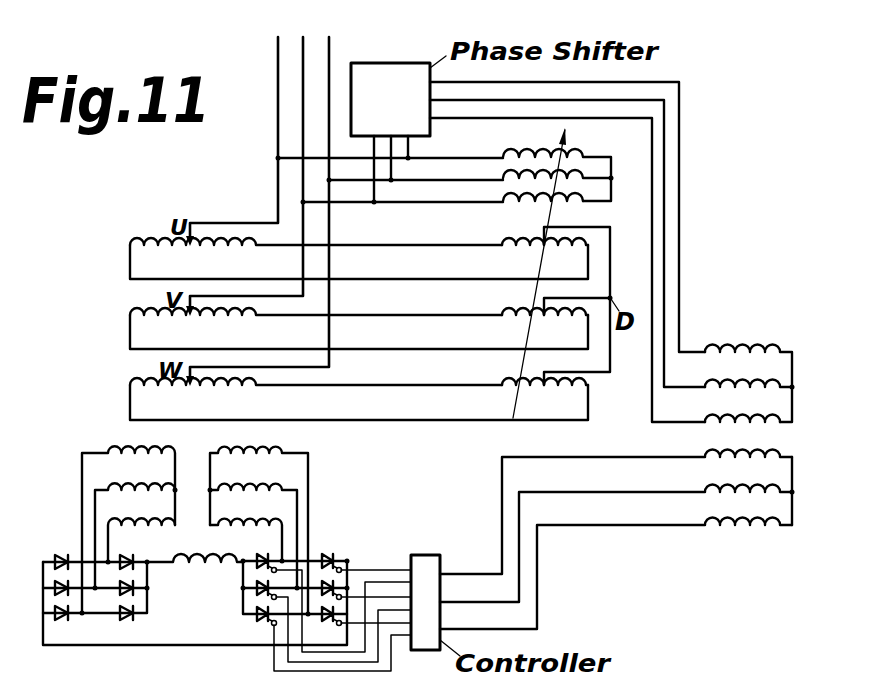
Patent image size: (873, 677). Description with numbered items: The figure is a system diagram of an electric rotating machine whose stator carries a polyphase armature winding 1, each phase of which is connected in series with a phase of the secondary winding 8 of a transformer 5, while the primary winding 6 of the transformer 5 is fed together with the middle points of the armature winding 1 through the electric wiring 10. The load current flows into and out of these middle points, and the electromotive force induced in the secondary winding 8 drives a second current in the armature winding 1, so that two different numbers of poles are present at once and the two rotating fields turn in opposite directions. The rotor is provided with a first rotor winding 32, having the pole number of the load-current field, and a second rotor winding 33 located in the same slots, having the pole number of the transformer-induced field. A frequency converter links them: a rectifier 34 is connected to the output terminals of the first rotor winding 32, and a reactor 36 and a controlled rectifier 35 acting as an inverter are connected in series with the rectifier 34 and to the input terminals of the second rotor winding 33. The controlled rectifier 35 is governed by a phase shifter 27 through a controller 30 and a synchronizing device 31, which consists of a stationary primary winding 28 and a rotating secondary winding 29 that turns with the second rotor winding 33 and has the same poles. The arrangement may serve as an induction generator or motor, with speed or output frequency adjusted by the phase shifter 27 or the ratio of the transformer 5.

The armature winding 1 is at (147, 237).
The transformer 5 is at (560, 395).
The primary winding 6 is at (587, 152).
The secondary winding 8 is at (590, 250).
The electric wiring 10 is at (328, 120).
The phase shifter 27 is at (491, 242).
The primary winding 28 is at (713, 351).
The secondary winding 29 is at (738, 529).
The controller 30 is at (433, 555).
The synchronizing device 31 is at (810, 476).
The first rotor winding 32 is at (140, 452).
The second rotor winding 33 is at (283, 452).
The rectifier 34 is at (148, 596).
The controlled rectifier 35 is at (326, 552).
The reactor 36 is at (195, 576).